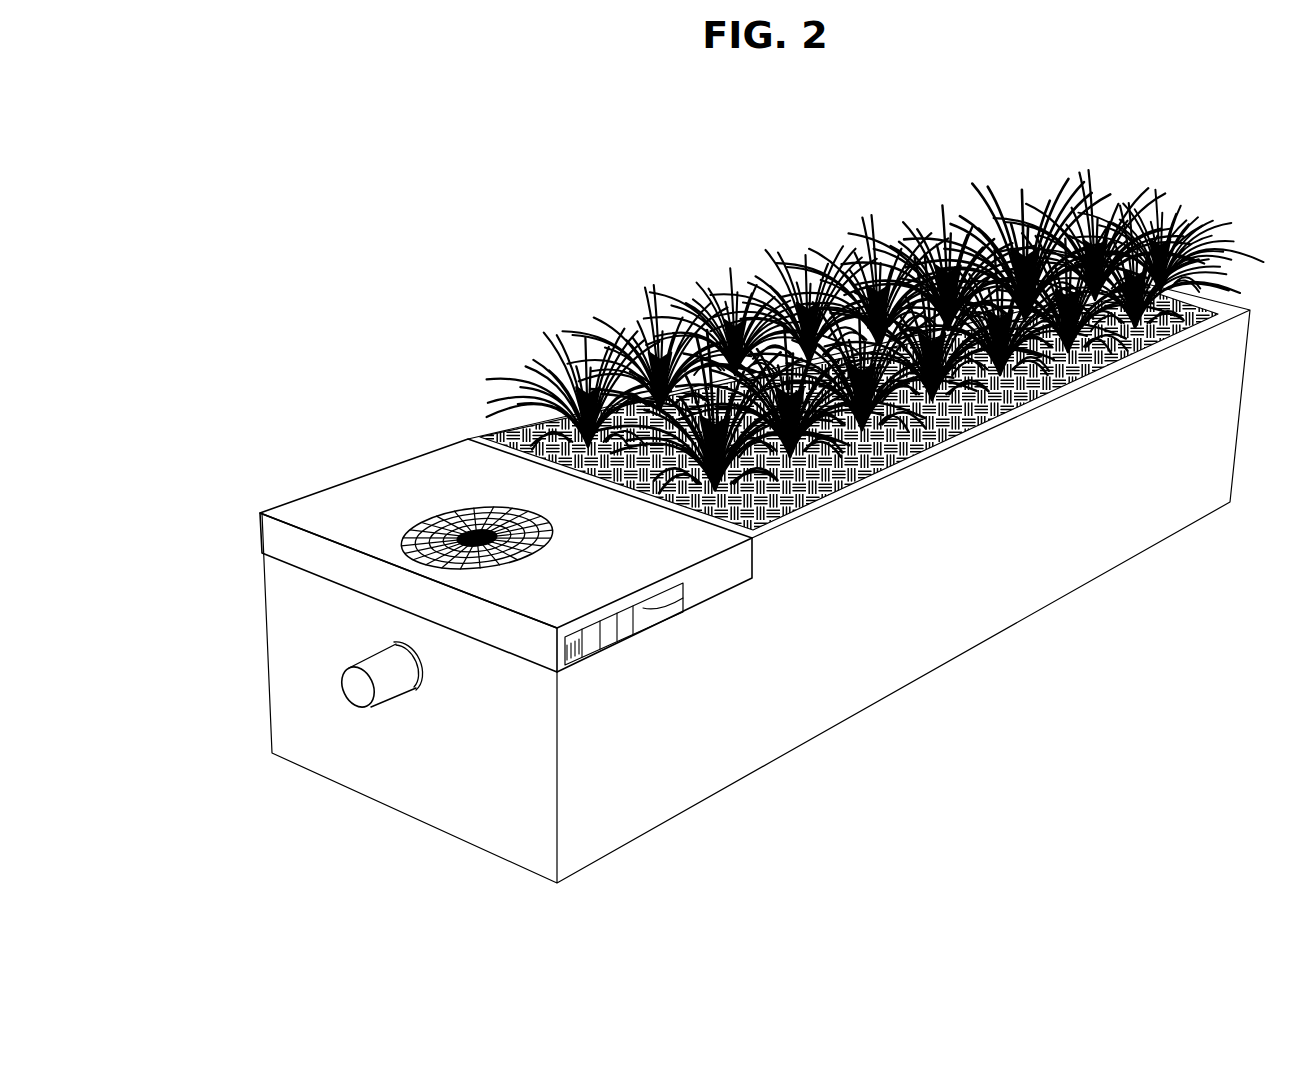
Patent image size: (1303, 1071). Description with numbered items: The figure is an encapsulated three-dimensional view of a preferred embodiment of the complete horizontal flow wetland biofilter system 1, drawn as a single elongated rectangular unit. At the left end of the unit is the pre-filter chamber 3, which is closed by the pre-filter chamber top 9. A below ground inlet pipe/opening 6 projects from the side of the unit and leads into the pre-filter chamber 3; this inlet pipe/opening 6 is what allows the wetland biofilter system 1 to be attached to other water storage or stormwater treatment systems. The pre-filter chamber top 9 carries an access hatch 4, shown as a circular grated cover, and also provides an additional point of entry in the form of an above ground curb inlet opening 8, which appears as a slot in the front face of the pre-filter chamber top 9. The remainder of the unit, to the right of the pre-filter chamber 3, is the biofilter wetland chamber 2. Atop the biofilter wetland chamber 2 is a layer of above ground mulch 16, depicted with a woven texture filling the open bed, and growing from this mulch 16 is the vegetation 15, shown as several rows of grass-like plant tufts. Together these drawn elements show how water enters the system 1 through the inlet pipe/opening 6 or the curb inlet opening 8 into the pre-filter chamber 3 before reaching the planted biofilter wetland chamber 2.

The wetland biofilter system 1 is at (1240, 508).
The biofilter wetland chamber 2 is at (883, 336).
The pre-filter chamber 3 is at (531, 642).
The access hatch 4 is at (407, 543).
The inlet pipe/opening 6 is at (353, 668).
The curb inlet opening 8 is at (608, 640).
The pre-filter chamber top 9 is at (277, 535).
The vegetation 15 is at (1065, 233).
The mulch 16 is at (1168, 322).